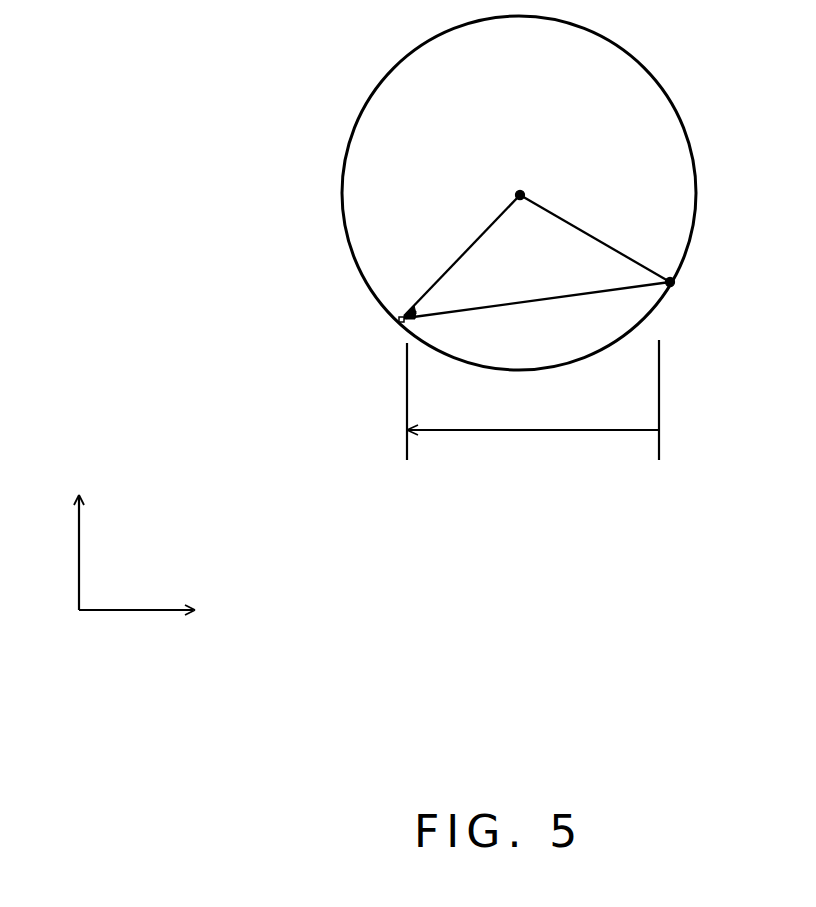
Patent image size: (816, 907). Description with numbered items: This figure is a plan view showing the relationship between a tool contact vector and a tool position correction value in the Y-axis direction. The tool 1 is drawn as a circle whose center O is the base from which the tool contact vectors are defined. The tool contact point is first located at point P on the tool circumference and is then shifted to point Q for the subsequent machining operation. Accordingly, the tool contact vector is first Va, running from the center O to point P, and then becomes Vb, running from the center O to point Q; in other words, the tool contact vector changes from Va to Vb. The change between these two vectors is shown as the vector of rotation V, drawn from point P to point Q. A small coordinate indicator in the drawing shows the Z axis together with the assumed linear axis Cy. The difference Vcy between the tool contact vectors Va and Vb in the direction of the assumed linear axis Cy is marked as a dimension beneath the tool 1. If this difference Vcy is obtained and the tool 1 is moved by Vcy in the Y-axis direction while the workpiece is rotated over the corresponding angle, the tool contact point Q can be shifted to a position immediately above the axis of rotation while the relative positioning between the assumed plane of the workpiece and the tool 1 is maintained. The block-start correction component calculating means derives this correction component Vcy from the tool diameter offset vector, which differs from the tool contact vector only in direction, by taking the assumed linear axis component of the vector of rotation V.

The tool 1 is at (613, 47).
The center of the tool O is at (532, 178).
The tool contact point (first position) P is at (397, 323).
The tool contact point (shifted position) Q is at (676, 287).
The tool contact vector (first) Va is at (462, 250).
The tool contact vector (second) Vb is at (600, 240).
The vector of rotation of the tool contact vector V is at (545, 295).
The correction component in the assumed linear axis direction Vcy is at (533, 400).
The Z axis Z is at (78, 531).
The assumed linear axis Cy is at (159, 613).